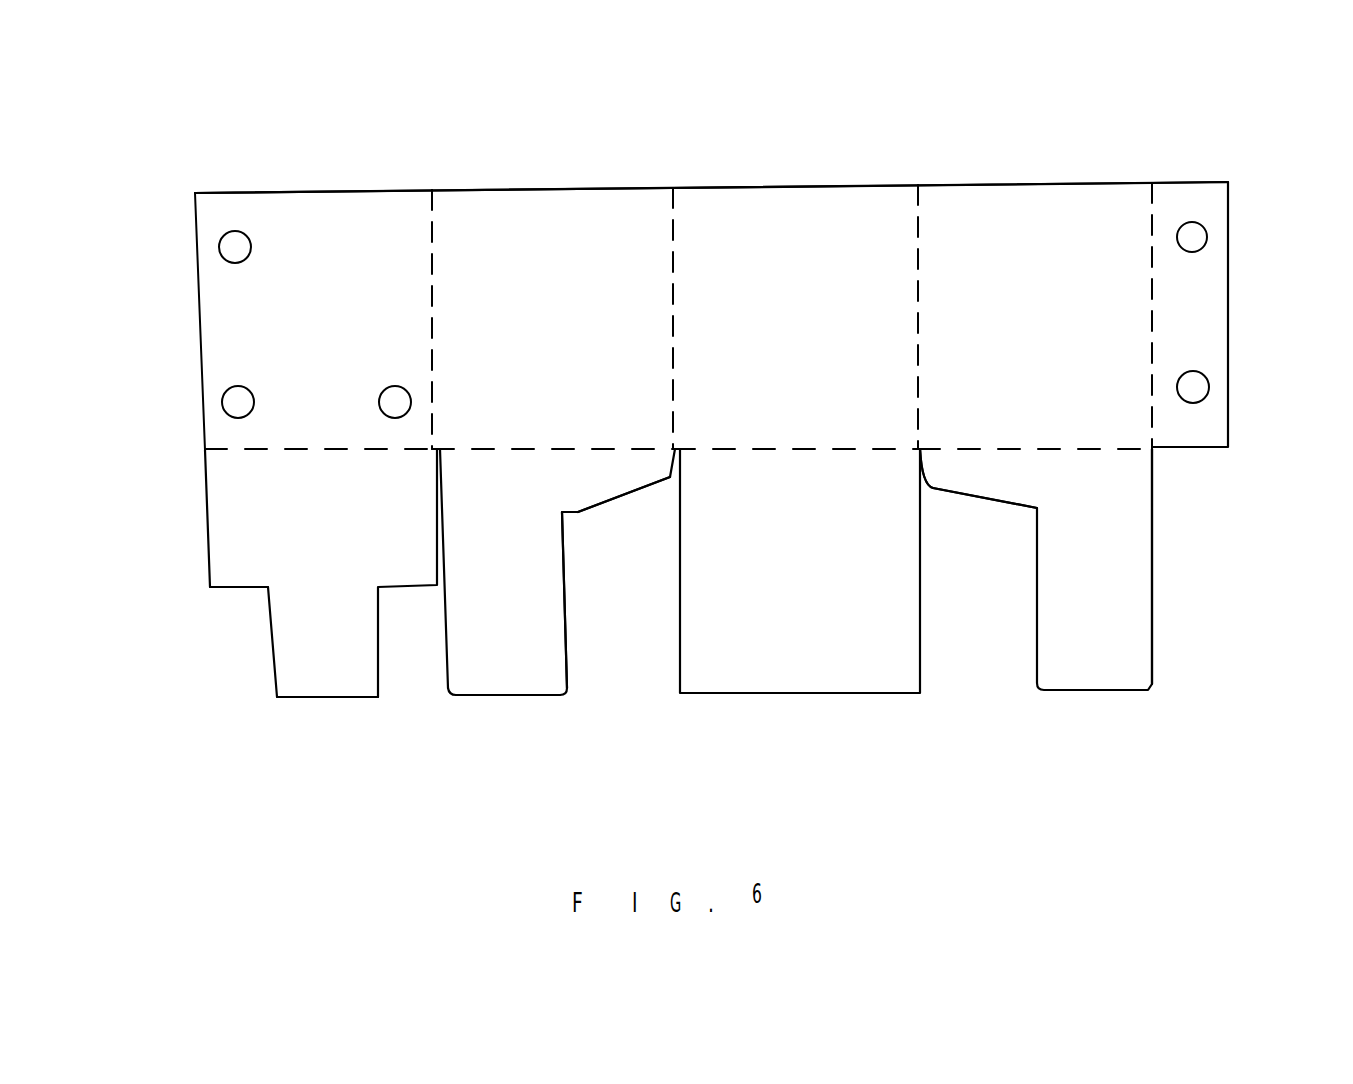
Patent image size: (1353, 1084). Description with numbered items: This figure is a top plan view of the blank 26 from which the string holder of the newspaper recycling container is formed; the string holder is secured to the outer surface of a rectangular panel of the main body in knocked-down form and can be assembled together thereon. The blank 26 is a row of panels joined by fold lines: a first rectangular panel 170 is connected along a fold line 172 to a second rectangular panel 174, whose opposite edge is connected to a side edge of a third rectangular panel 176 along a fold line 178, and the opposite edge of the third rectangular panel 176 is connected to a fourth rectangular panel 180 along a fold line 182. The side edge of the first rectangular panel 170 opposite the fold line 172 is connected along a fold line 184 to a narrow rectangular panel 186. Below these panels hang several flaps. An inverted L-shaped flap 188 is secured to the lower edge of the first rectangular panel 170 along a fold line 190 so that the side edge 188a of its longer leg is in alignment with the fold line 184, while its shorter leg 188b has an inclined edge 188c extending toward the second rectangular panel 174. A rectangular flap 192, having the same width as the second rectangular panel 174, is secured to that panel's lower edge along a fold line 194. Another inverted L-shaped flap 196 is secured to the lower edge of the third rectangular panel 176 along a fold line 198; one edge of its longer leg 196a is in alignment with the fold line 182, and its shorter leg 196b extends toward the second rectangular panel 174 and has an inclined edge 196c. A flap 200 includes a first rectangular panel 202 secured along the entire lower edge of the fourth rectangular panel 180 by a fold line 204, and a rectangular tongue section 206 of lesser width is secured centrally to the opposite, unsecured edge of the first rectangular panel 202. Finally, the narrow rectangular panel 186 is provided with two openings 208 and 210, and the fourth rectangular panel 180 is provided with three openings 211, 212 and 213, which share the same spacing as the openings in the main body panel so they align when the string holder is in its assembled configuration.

The blank 26 is at (973, 128).
The first rectangular panel 170 is at (1053, 193).
The fold line 172 is at (913, 235).
The second rectangular panel 174 is at (752, 203).
The third rectangular panel 176 is at (535, 203).
The fold line 178 is at (668, 228).
The fourth rectangular panel 180 is at (253, 203).
The fold line 182 is at (428, 233).
The fold line 184 is at (1147, 193).
The narrow rectangular panel 186 is at (1217, 202).
The inverted L-shaped flap 188 is at (1067, 670).
The side edge 188a is at (1135, 613).
The shorter leg 188b is at (978, 482).
The inclined edge 188c is at (947, 492).
The fold line 190 is at (1025, 445).
The rectangular flap 192 is at (712, 675).
The fold line 194 is at (727, 445).
The inverted L-shaped flap 196 is at (485, 670).
The longer leg 196a is at (530, 667).
The shorter leg 196b is at (583, 488).
The inclined edge 196c is at (633, 495).
The fold line 198 is at (522, 445).
The flap 200 is at (218, 538).
The first rectangular panel 202 is at (227, 582).
The fold line 204 is at (297, 450).
The rectangular tongue section 206 is at (295, 690).
The opening 208 is at (1207, 238).
The opening 210 is at (1207, 392).
The opening 211 is at (250, 248).
The opening 212 is at (388, 395).
The opening 213 is at (240, 392).